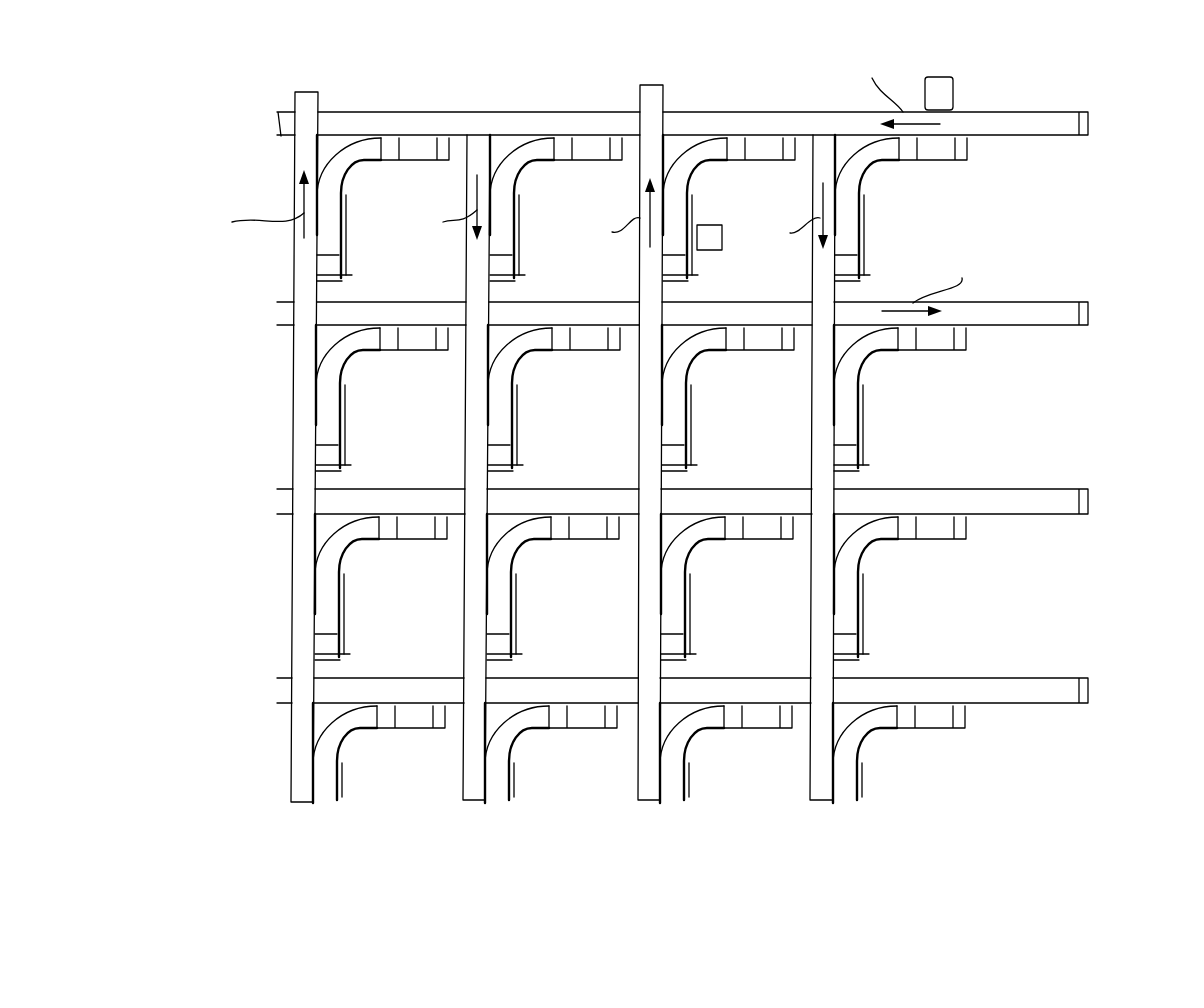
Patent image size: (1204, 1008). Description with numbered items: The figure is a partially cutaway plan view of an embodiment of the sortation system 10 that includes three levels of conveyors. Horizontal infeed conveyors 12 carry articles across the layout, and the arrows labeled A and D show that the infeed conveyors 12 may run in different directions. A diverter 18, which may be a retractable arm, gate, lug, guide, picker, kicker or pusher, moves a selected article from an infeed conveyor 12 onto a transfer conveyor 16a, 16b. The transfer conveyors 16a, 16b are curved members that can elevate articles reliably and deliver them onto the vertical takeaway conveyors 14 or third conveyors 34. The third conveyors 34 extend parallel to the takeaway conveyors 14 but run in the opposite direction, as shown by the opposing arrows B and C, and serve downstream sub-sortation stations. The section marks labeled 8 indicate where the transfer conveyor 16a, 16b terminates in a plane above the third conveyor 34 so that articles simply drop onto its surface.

The sortation system 10 is at (1158, 145).
The infeed conveyor 12 is at (1022, 112).
The takeaway conveyor 14 is at (822, 293).
The transfer conveyor 16a is at (542, 158).
The transfer conveyor 16b is at (368, 150).
The diverter 18 is at (940, 77).
The third conveyor 34 is at (648, 410).
The section line for FIG. 8 is at (640, 285).